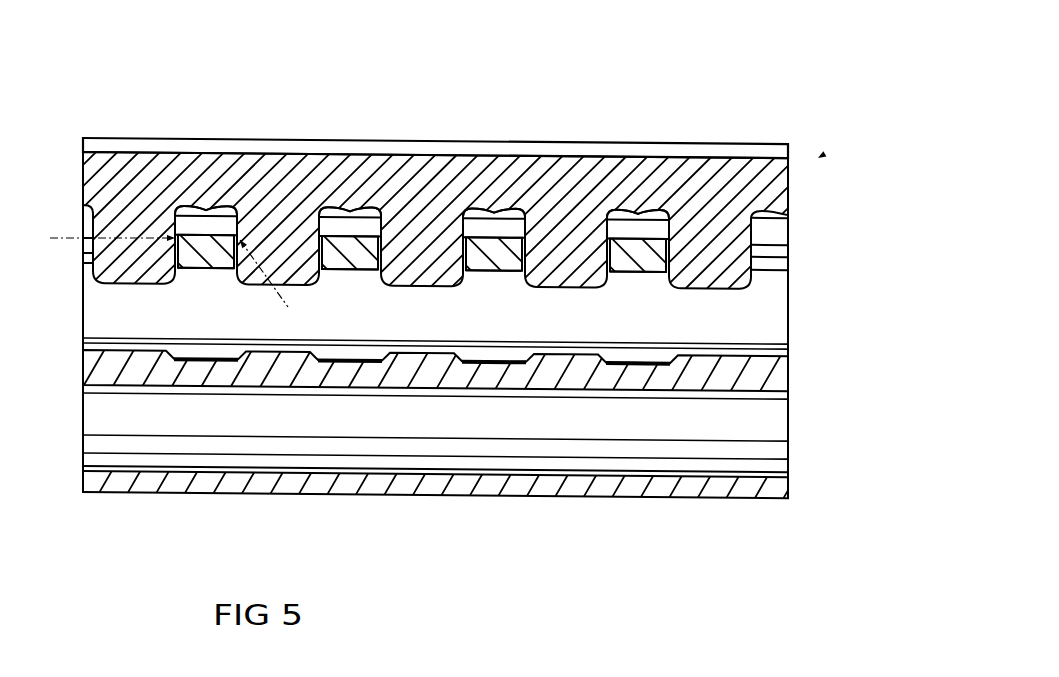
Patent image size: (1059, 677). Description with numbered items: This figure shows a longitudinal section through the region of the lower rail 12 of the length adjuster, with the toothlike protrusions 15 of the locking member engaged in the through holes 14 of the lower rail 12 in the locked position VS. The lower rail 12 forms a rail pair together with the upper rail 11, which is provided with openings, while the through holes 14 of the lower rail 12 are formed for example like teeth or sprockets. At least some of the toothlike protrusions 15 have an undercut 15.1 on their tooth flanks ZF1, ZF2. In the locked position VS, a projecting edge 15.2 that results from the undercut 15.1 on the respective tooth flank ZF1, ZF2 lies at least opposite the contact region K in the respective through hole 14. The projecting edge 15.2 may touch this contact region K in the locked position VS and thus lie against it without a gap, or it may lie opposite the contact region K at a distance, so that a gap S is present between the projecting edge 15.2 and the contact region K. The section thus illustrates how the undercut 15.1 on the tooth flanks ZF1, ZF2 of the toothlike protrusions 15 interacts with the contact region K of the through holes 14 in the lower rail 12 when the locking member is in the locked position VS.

The upper rail 11 is at (768, 375).
The lower rail 12 is at (773, 167).
The through hole 14 is at (186, 205).
The toothlike protrusion 15 is at (222, 232).
The undercut 15.1 is at (178, 270).
The projecting edge 15.2 is at (173, 204).
The contact region K is at (173, 228).
The gap S is at (167, 281).
The locked position VS is at (820, 156).
The tooth flank ZF1 is at (193, 270).
The tooth flank ZF2 is at (215, 272).